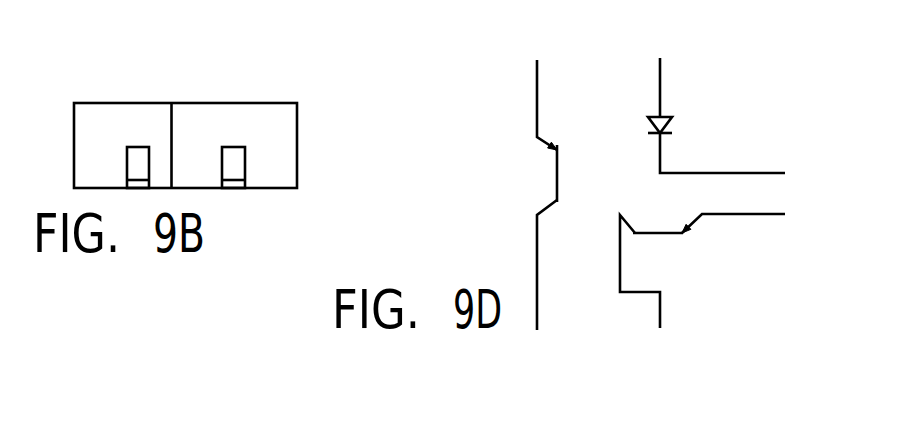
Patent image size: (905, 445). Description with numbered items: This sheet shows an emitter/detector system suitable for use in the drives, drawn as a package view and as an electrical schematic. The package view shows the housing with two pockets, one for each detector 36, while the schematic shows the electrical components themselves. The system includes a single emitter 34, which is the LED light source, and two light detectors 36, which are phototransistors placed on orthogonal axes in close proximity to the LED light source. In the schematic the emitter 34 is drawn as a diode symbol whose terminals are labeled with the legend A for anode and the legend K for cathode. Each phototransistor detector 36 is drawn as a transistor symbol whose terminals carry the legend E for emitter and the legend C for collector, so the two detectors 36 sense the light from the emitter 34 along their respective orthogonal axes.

The emitter 34 is at (725, 111).
The detector 36 is at (637, 193).
The emitter E is at (665, 132).
The collector C is at (599, 277).
The anode A is at (658, 74).
The cathode K is at (672, 133).